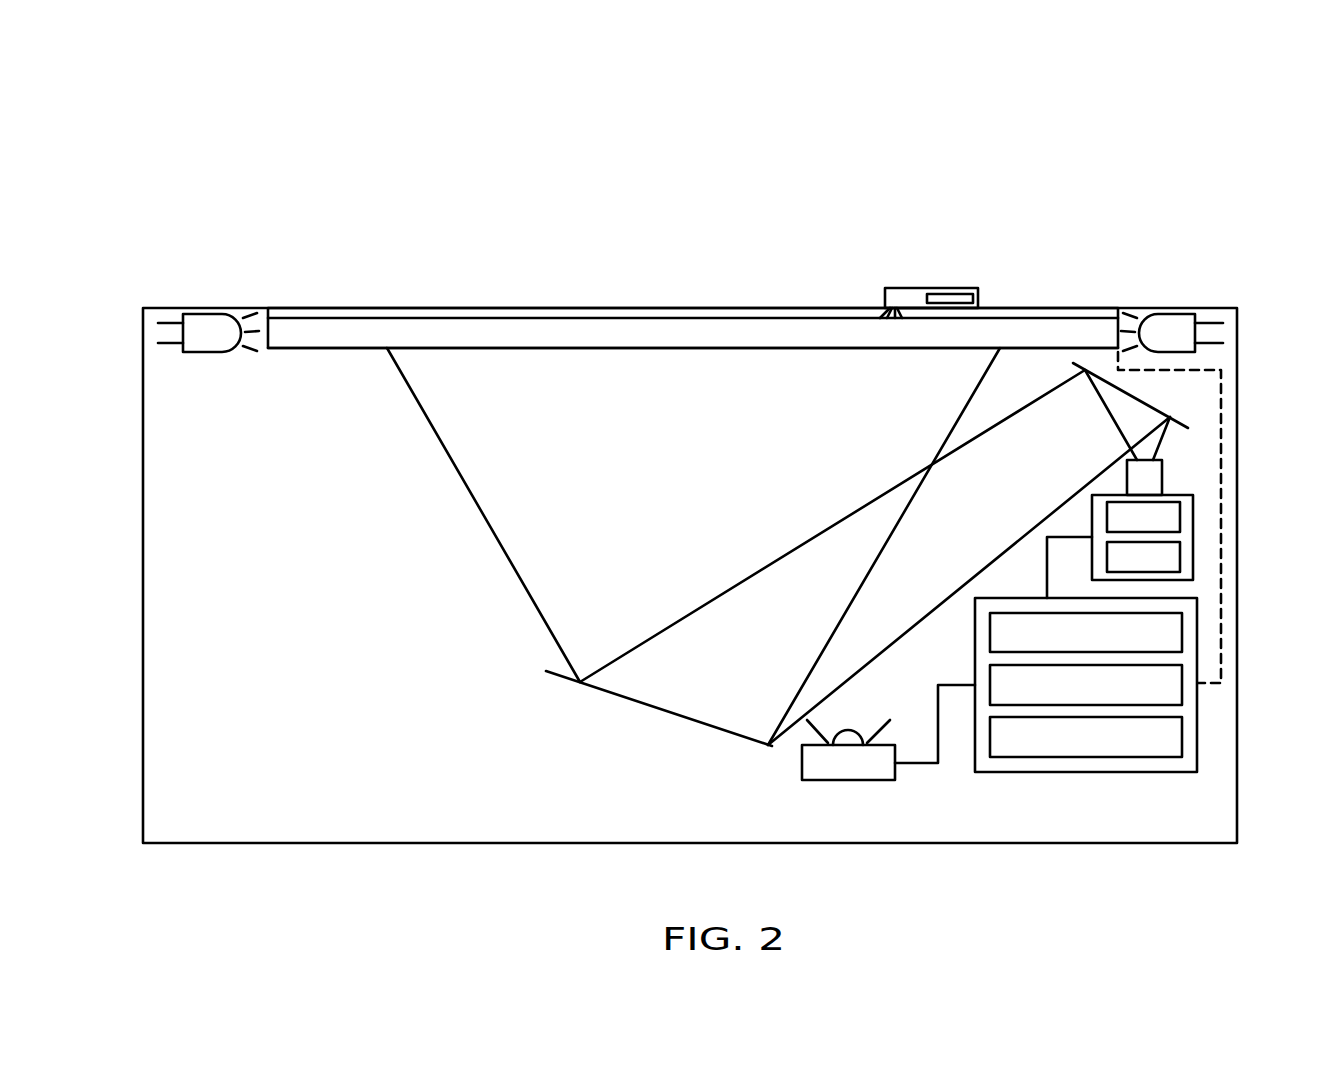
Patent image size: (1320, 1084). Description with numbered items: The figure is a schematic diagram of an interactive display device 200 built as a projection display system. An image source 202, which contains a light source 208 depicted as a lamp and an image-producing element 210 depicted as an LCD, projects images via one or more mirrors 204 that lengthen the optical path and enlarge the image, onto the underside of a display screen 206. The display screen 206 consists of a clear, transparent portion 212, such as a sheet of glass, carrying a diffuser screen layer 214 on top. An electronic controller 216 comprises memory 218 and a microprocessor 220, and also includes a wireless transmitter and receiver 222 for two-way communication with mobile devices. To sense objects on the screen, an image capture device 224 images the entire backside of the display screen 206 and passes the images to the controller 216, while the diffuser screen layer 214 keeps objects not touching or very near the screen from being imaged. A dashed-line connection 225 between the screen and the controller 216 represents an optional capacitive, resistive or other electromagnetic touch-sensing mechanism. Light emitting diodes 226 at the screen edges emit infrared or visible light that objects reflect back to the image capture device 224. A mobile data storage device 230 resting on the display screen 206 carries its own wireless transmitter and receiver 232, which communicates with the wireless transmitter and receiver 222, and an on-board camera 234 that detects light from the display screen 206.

The interactive display device 200 is at (317, 152).
The image source 202 is at (1191, 534).
The mirrors 204 is at (1148, 402).
The display screen 206 is at (422, 308).
The light source 208 is at (1180, 557).
The image-producing element 210 is at (1180, 515).
The clear, transparent portion 212 is at (476, 335).
The diffuser screen layer 214 is at (523, 317).
The electronic controller 216 is at (1132, 689).
The memory 218 is at (1182, 633).
The microprocessor 220 is at (1182, 690).
The wireless transmitter and receiver 222 is at (1087, 757).
The image capture device 224 is at (848, 762).
The dashed-line connection 225 is at (1222, 442).
The light emitting diodes 226 is at (211, 313).
The mobile data storage device 230 is at (910, 288).
The wireless transmitter and receiver 232 is at (962, 298).
The on-board camera 234 is at (880, 312).